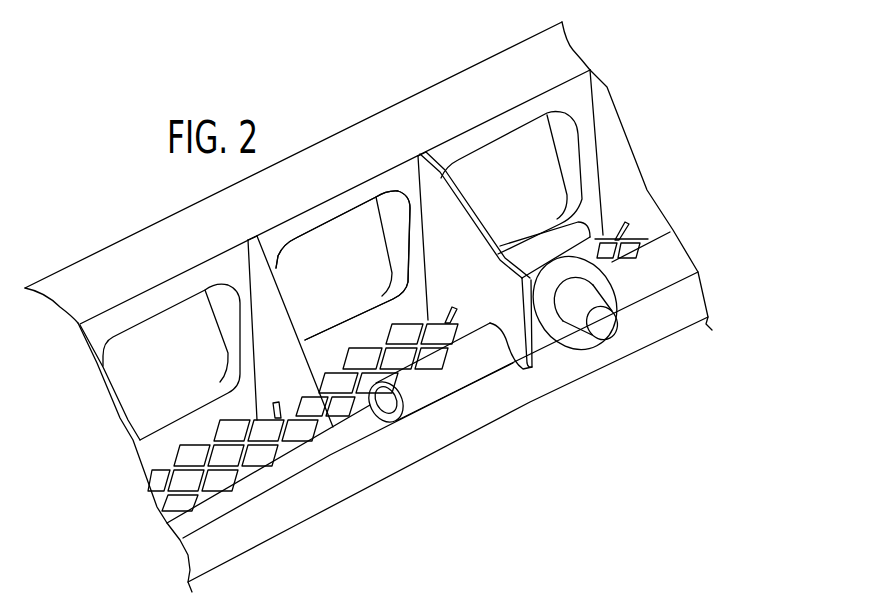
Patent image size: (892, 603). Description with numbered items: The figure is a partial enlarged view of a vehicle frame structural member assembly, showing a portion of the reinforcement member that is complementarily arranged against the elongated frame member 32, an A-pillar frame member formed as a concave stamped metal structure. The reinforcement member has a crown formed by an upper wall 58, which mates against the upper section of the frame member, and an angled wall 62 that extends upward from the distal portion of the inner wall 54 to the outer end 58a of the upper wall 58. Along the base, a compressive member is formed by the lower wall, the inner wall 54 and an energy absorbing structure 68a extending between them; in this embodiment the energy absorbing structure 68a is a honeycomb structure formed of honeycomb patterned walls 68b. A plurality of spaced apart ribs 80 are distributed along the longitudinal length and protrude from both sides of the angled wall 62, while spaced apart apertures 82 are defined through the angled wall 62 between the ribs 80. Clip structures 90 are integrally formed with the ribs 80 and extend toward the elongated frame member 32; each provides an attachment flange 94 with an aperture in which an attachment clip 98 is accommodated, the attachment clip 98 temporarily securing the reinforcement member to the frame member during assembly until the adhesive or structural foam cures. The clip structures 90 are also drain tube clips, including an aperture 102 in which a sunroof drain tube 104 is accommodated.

The elongated frame member 32 is at (459, 61).
The inner wall 54 is at (157, 445).
The upper wall 58 is at (353, 145).
The outer end of the upper wall 58a is at (288, 205).
The angled wall 62 is at (342, 202).
The energy absorbing structure 68a is at (225, 477).
The honeycomb patterned walls 68b is at (283, 413).
The ribs 80 is at (220, 312).
The apertures 82 is at (135, 325).
The clip structures 90 is at (519, 374).
The attachment flange 94 is at (542, 347).
The attachment clip 98 is at (607, 325).
The aperture 102 is at (495, 326).
The sunroof drain tube 104 is at (437, 381).